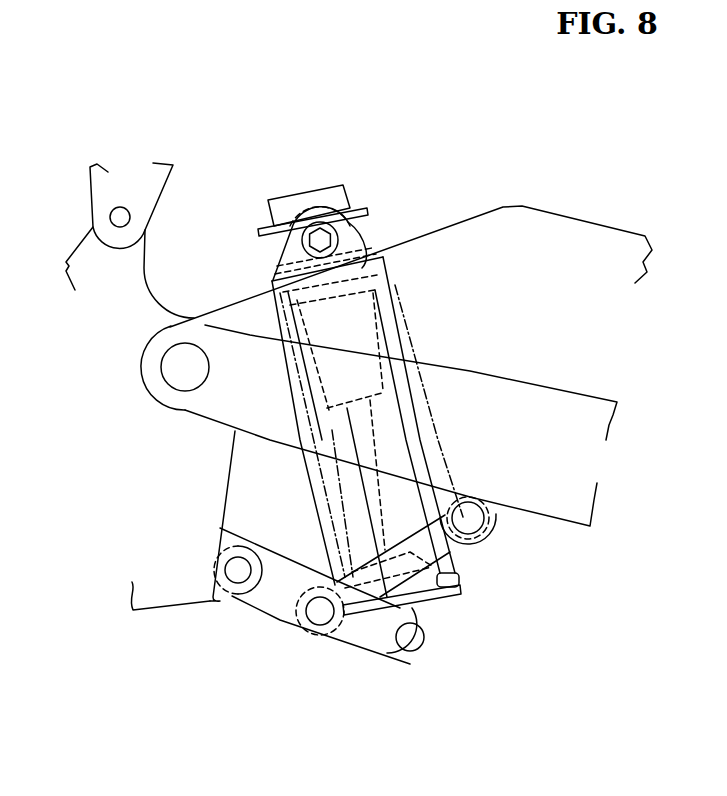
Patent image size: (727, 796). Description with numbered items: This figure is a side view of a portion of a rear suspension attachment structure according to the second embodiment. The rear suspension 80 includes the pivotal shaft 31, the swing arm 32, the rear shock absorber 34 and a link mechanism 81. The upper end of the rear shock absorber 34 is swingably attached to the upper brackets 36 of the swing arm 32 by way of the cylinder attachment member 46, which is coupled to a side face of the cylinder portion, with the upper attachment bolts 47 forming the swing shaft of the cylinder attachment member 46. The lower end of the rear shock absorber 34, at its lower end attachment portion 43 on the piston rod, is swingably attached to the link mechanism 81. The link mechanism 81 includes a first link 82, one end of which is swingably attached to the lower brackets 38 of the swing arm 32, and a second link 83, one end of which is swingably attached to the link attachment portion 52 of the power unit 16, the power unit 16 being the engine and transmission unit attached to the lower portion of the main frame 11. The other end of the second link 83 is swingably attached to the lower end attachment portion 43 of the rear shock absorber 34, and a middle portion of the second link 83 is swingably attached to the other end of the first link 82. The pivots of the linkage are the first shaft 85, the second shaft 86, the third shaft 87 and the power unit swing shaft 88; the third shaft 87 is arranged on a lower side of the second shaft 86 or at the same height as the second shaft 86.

The main frame 11 is at (88, 182).
The power unit 16 is at (152, 612).
The pivotal shaft 31 is at (160, 367).
The swing arm 32 is at (582, 218).
The rear shock absorber 34 is at (335, 173).
The upper brackets 36 is at (368, 242).
The lower brackets 38 is at (500, 528).
The lower end attachment portion 43 is at (440, 620).
The cylinder attachment member 46 is at (272, 247).
The upper attachment bolts 47 is at (270, 254).
The link attachment portion 52 is at (222, 598).
The rear suspension 80 is at (241, 147).
The link mechanism 81 is at (500, 597).
The first link 82 is at (453, 557).
The second link 83 is at (350, 653).
The first shaft 85 is at (487, 503).
The second shaft 86 is at (311, 625).
The third shaft 87 is at (431, 667).
The power unit swing shaft 88 is at (240, 557).